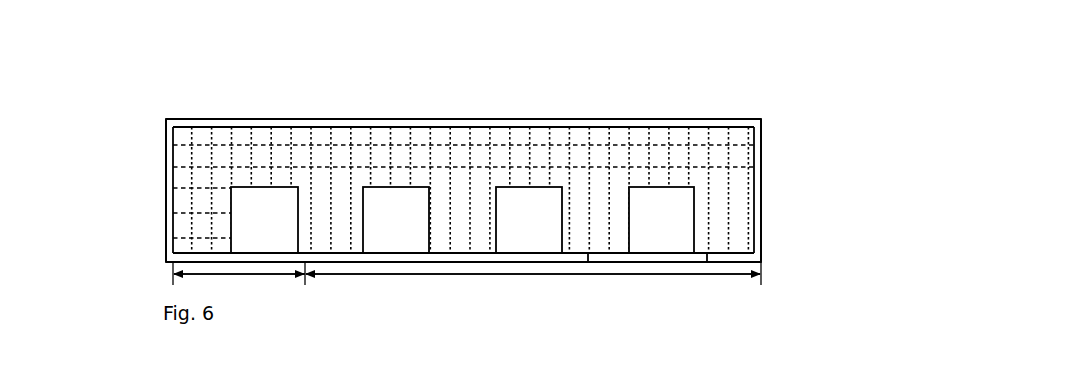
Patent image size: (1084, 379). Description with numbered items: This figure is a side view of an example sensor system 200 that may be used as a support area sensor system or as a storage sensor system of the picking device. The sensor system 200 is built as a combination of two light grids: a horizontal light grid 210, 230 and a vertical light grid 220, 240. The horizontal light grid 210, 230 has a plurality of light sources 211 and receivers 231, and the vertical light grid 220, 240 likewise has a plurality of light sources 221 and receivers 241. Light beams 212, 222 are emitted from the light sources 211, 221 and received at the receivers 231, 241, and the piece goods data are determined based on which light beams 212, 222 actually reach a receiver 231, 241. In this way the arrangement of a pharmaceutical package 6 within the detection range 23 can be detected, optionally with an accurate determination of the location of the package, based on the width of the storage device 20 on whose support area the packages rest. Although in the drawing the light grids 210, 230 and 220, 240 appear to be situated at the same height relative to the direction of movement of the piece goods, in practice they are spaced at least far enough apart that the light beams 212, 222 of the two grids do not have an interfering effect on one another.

The sensor system 200 is at (157, 100).
The horizontal light grid light source side 210 is at (213, 118).
The light sources 211 is at (290, 128).
The light beams 212 is at (372, 138).
The light beams 222 is at (182, 167).
The vertical light grid light source side 220 is at (165, 183).
The light sources 221 is at (175, 213).
The pharmaceutical package 6 is at (393, 217).
The receivers 241 is at (755, 145).
The vertical light grid receiver side 240 is at (762, 195).
The detection range 23 is at (260, 253).
The storage device 20 is at (458, 275).
The horizontal light grid receiver side 230 is at (588, 255).
The receivers 231 is at (707, 255).